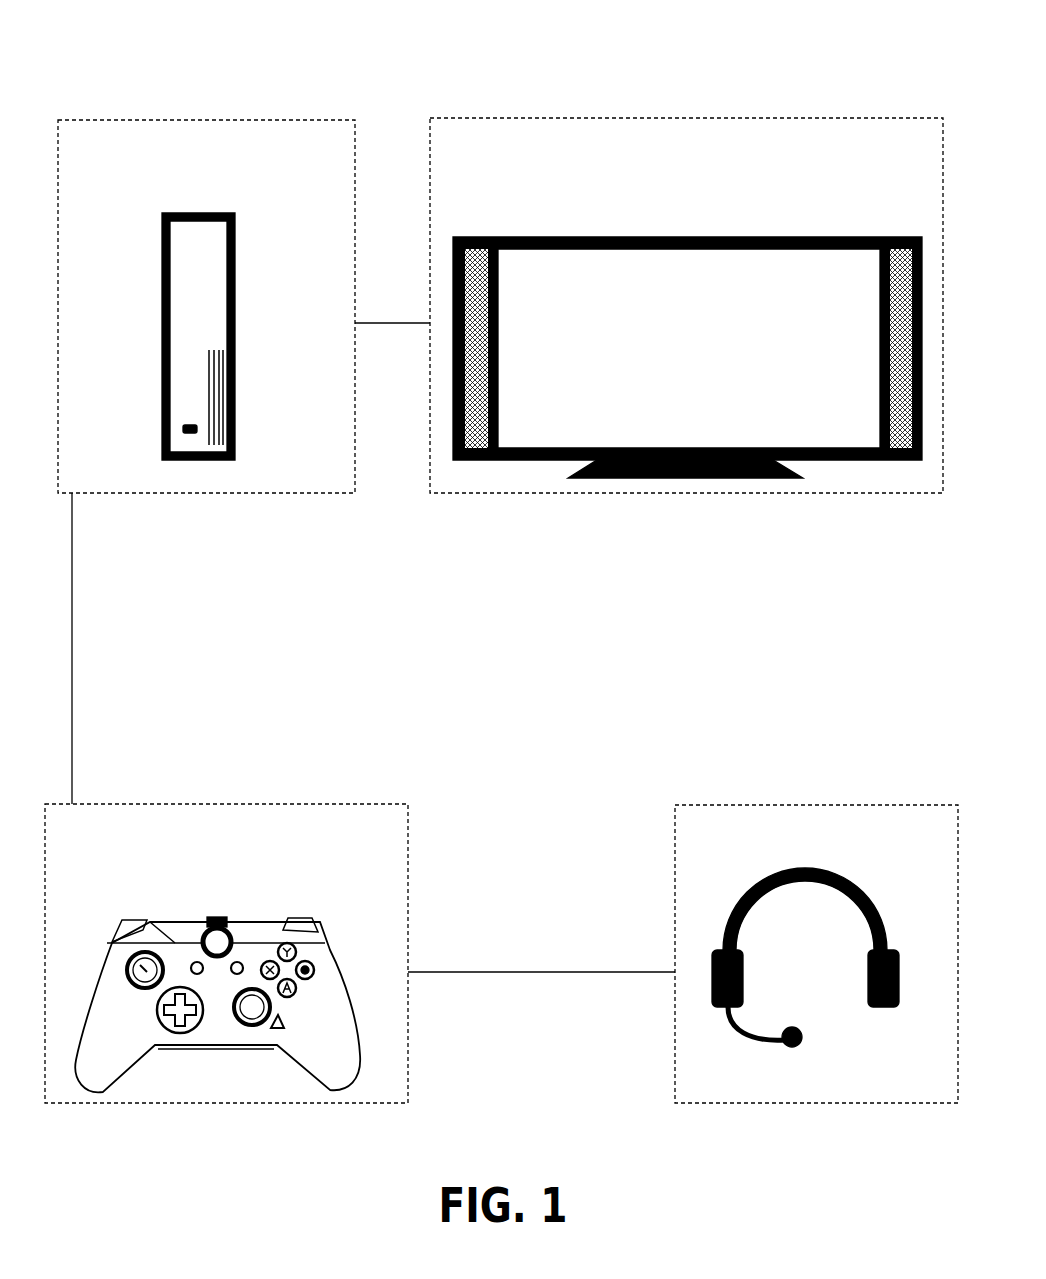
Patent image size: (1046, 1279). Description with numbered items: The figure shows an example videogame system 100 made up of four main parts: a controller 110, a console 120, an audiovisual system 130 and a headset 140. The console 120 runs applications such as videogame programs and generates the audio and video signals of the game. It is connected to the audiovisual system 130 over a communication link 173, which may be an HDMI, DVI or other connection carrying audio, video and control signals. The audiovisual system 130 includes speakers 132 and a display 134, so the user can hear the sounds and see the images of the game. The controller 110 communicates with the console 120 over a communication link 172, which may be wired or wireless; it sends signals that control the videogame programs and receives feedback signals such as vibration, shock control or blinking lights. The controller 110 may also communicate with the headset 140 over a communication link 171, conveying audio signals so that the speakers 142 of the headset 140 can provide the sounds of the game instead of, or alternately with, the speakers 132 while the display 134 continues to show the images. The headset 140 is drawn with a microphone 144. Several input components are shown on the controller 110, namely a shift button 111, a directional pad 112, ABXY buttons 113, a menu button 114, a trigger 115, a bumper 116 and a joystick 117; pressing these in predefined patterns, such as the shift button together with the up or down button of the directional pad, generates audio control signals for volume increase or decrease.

The videogame system 100 is at (496, 67).
The controller 110 is at (207, 866).
The shift button 111 is at (290, 1024).
The directional pad 112 is at (171, 1028).
The ABXY buttons 113 is at (303, 958).
The menu button 114 is at (243, 963).
The trigger 115 is at (117, 925).
The bumper 116 is at (162, 924).
The joystick 117 is at (127, 965).
The console 120 is at (206, 306).
The audiovisual system 130 is at (686, 305).
The speakers 132 is at (478, 258).
The display 134 is at (528, 243).
The headset 140 is at (838, 866).
The speakers 142 is at (745, 967).
The microphone 144 is at (800, 1043).
The communication link 171 is at (498, 978).
The communication link 172 is at (78, 710).
The communication link 173 is at (391, 330).